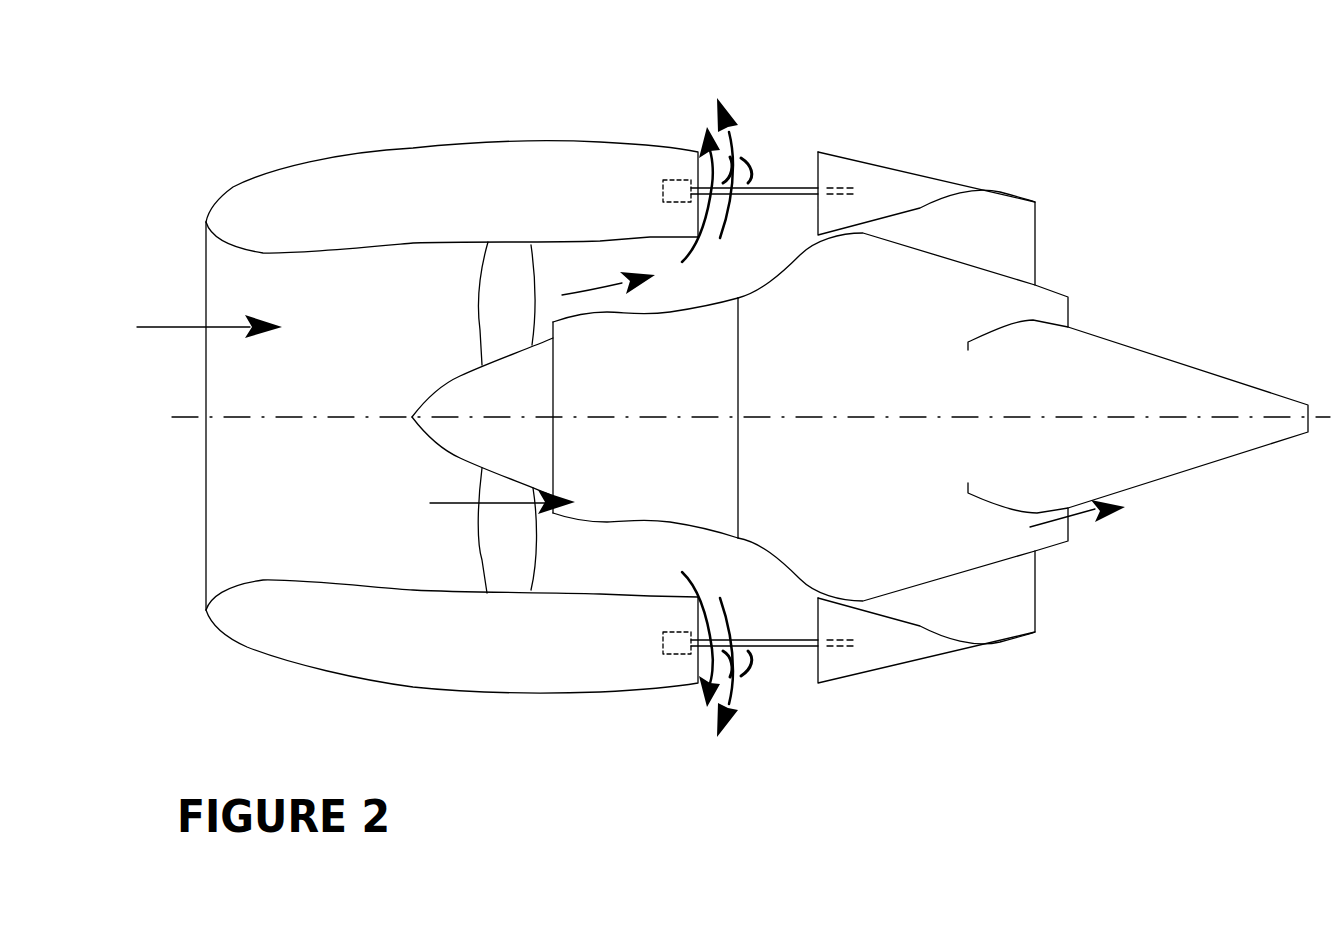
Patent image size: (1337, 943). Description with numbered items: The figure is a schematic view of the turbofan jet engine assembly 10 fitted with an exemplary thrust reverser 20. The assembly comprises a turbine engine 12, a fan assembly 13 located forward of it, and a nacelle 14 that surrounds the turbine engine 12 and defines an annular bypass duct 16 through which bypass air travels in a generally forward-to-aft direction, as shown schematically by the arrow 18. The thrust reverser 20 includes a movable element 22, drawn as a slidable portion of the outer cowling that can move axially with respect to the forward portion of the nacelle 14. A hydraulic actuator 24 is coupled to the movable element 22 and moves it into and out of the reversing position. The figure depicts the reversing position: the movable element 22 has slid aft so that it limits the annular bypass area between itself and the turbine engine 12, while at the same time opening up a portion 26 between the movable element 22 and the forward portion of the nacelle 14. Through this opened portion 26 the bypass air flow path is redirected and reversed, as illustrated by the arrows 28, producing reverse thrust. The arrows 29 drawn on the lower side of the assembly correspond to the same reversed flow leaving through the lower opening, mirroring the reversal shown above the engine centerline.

The turbofan jet engine assembly 10 is at (231, 158).
The turbine engine 12 is at (663, 340).
The fan assembly 13 is at (502, 262).
The nacelle 14 is at (327, 162).
The annular bypass duct 16 is at (558, 266).
The bypass air flow path arrow 18 is at (602, 285).
The thrust reverser 20 is at (809, 104).
The movable element 22 is at (853, 153).
The hydraulic actuator 24 is at (760, 187).
The portion 26 is at (703, 176).
The reversed air flow arrows 28 is at (734, 126).
The bypass exhaust flow arrows (lower) 29 is at (750, 667).